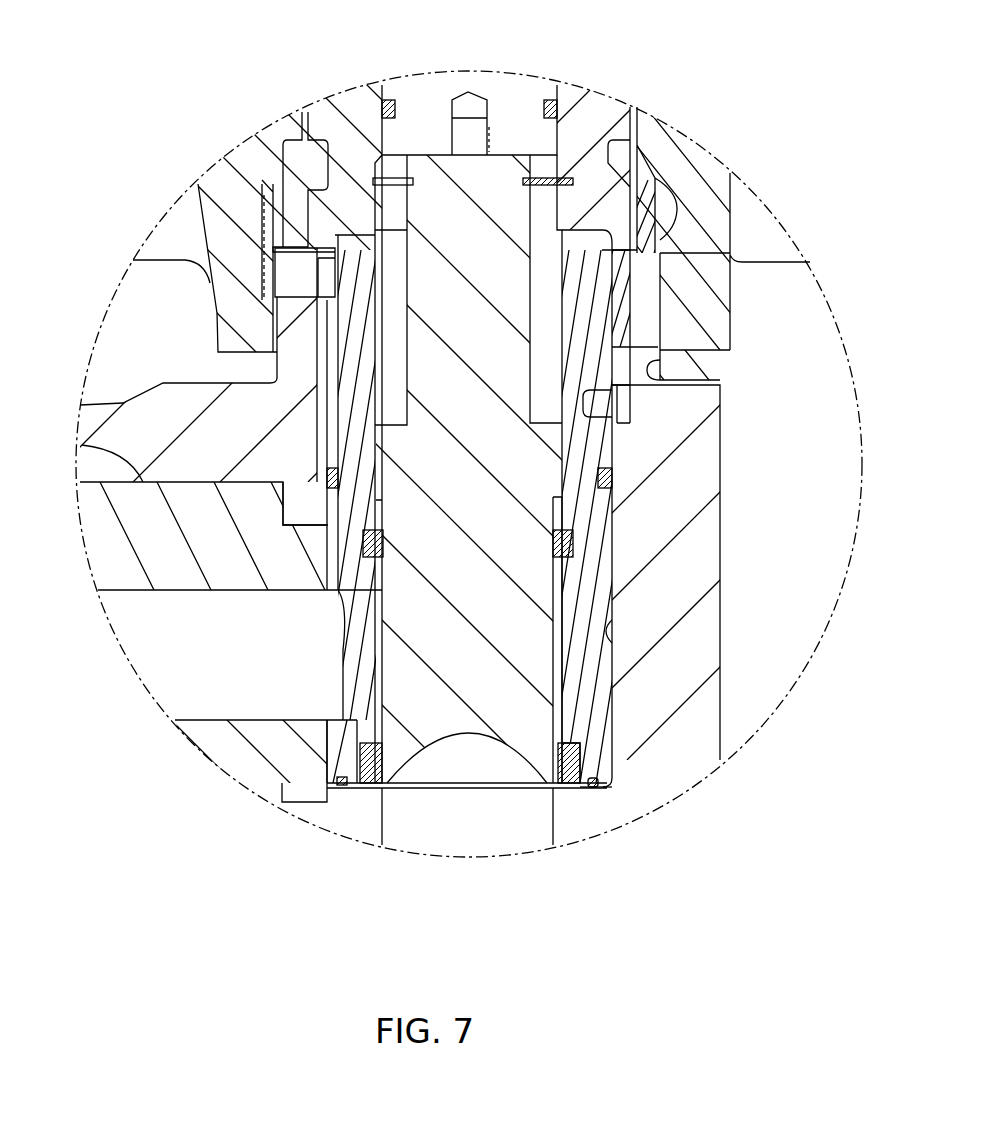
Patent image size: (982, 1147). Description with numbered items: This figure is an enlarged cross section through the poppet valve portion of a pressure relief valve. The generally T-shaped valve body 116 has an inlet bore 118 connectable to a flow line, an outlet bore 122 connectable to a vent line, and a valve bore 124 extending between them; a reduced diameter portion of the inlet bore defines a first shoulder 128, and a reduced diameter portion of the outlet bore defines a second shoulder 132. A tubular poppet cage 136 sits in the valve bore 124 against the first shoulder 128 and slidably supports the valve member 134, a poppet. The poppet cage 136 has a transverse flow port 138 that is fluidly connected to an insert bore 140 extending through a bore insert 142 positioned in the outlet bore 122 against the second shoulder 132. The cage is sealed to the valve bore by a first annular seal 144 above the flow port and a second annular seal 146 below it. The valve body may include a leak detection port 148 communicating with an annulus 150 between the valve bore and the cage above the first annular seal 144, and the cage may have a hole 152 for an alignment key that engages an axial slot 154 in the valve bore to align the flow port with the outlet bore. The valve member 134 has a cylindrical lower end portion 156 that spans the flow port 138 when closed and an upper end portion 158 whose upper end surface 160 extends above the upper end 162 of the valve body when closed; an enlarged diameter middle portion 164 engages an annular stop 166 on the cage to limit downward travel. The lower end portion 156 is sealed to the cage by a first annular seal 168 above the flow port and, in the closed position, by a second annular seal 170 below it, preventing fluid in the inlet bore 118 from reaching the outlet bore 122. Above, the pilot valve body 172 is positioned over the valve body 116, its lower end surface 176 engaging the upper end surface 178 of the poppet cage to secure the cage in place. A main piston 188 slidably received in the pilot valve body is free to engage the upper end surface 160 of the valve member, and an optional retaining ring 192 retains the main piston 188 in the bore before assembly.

The valve body 116 is at (720, 637).
The inlet bore 118 is at (552, 812).
The outlet bore 122 is at (118, 484).
The valve bore 124 is at (605, 625).
The first shoulder 128 is at (612, 778).
The second shoulder 132 is at (280, 510).
The valve member 134 is at (527, 630).
The poppet cage 136 is at (613, 690).
The flow port 138 is at (363, 592).
The insert bore 140 is at (218, 592).
The bore insert 142 is at (82, 443).
The first annular seal 144 is at (612, 478).
The second annular seal 146 is at (592, 790).
The leak detection port 148 is at (650, 376).
The annulus 150 is at (617, 437).
The hole 152 is at (605, 408).
The axial slot 154 is at (622, 347).
The lower end portion 156 is at (340, 683).
The upper end portion 158 is at (408, 344).
The upper end surface 160 is at (500, 133).
The upper end 162 is at (658, 248).
The enlarged diameter middle portion 164 is at (333, 470).
The annular stop 166 is at (377, 527).
The first annular seal 168 is at (575, 538).
The second annular seal 170 is at (613, 745).
The pilot valve body 172 is at (612, 103).
The lower end surface 176 is at (320, 250).
The upper end surface 178 is at (375, 198).
The main piston 188 is at (415, 92).
The retaining ring 192 is at (654, 141).